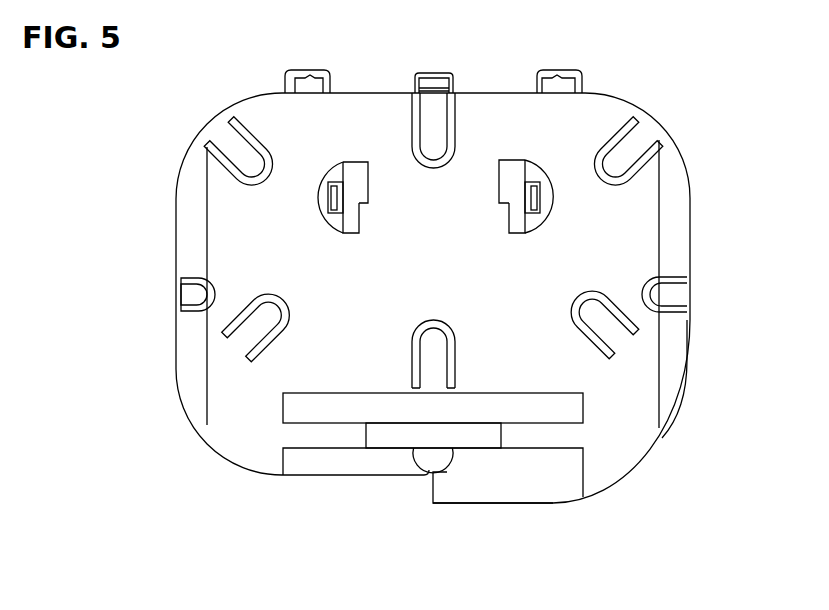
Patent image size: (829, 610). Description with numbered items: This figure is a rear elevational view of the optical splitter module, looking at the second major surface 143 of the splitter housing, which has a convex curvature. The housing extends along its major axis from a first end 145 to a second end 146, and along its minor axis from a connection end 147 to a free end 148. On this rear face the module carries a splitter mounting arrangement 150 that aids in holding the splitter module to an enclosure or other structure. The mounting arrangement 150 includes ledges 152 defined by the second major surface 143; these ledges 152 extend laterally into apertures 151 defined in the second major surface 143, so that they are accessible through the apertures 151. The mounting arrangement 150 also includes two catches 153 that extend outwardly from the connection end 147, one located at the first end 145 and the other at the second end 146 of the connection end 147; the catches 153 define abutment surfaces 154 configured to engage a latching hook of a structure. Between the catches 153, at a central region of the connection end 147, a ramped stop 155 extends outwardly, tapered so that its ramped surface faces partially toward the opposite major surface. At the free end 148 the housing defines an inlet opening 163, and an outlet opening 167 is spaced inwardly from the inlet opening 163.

The splitter mounting arrangement 150 is at (699, 59).
The second major surface 143 is at (411, 261).
The first end 145 is at (176, 259).
The second end 146 is at (690, 268).
The connection end 147 is at (498, 93).
The free end 148 is at (450, 503).
The apertures 151 is at (358, 209).
The ledges 152 is at (362, 198).
The catches 153 is at (317, 70).
The abutment surfaces 154 is at (292, 90).
The ramped stop 155 is at (434, 73).
The inlet opening 163 is at (433, 495).
The outlet opening 167 is at (433, 449).